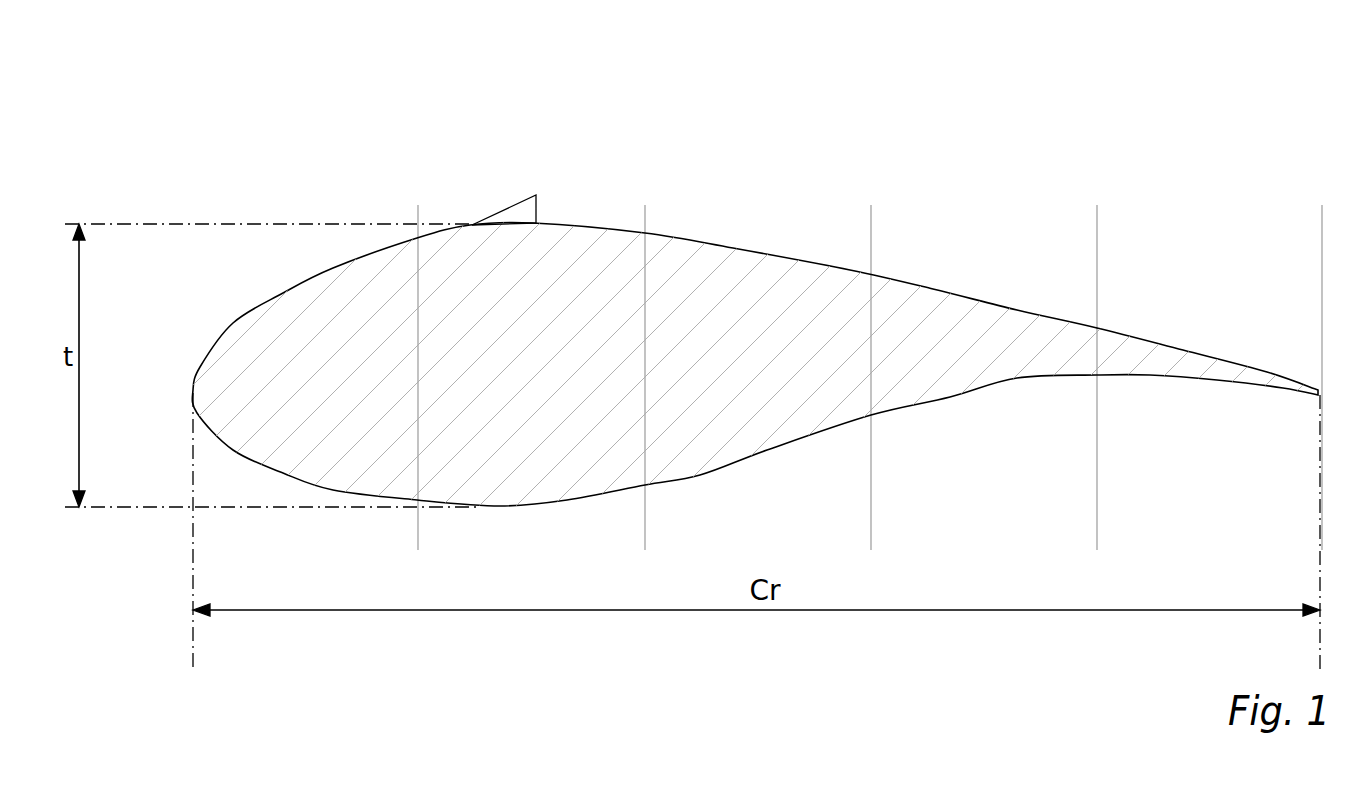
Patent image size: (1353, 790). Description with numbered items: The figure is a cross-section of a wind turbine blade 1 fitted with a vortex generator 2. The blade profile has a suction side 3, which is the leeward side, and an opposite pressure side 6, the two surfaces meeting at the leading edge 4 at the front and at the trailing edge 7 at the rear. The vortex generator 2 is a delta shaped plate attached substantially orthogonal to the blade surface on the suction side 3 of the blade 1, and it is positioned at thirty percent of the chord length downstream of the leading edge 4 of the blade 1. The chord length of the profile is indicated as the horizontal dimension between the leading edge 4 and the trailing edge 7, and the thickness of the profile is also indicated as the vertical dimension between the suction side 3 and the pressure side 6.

The blade 1 is at (949, 245).
The vortex generator 2 is at (522, 212).
The suction side 3 is at (742, 248).
The leading edge 4 is at (192, 391).
The pressure side 6 is at (720, 463).
The trailing edge 7 is at (1318, 394).